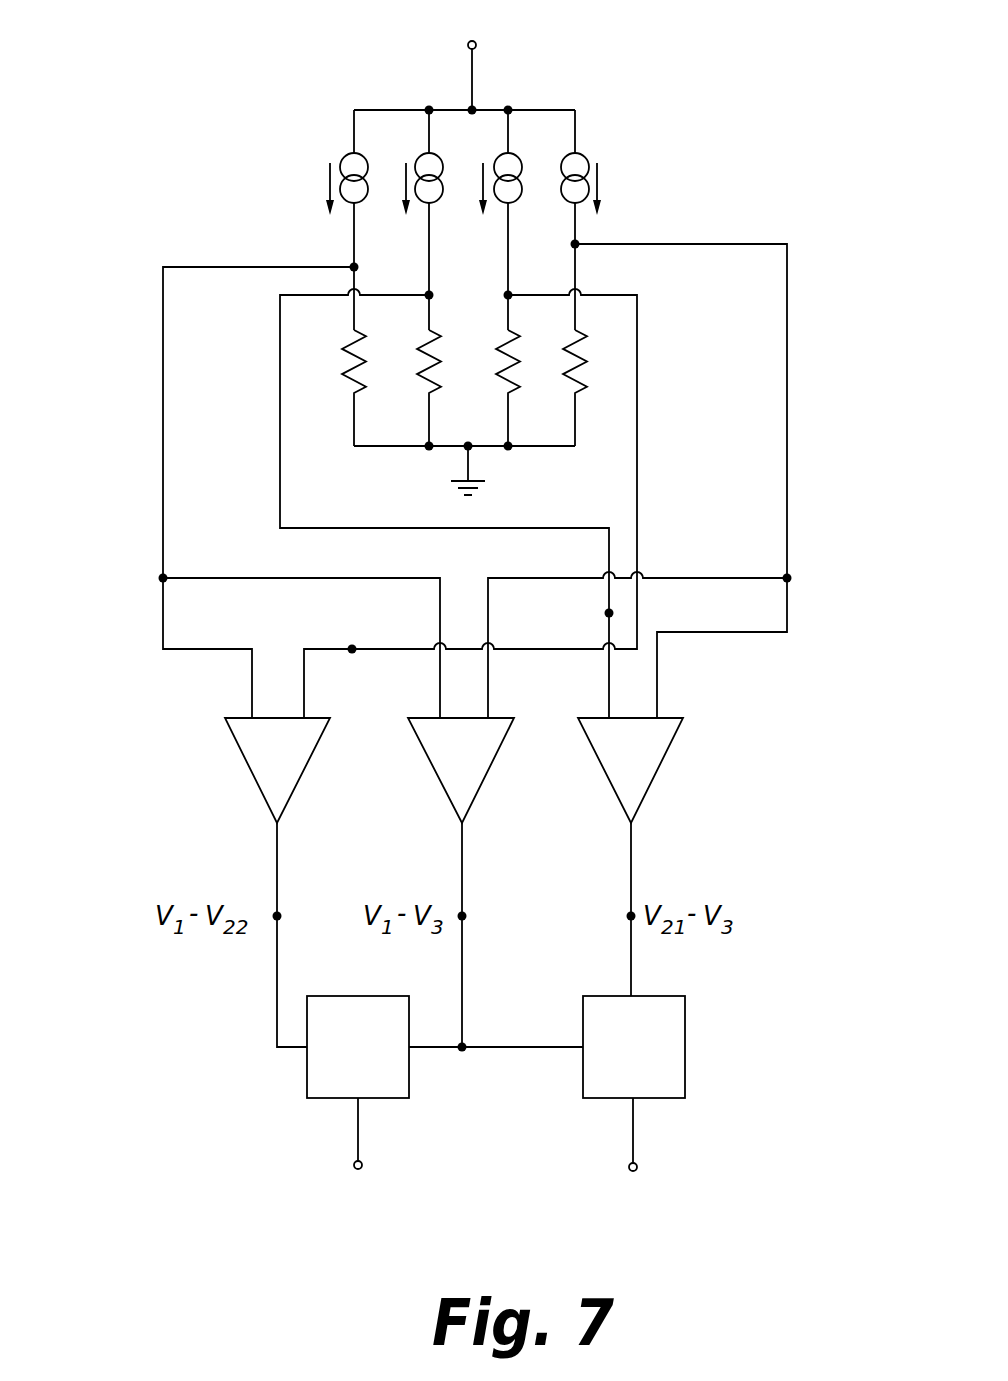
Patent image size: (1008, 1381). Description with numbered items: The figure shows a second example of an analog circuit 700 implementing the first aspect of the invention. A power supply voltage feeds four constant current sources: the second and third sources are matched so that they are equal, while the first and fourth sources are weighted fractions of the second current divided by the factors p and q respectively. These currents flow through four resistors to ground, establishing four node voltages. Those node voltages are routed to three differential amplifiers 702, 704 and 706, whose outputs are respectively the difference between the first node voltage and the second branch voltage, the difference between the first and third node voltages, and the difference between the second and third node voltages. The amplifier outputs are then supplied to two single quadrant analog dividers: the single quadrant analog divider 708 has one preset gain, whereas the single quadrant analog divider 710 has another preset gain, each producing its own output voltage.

The analog circuit 700 is at (270, 136).
The differential amplifier 702 is at (251, 770).
The differential amplifier 704 is at (445, 790).
The differential amplifier 706 is at (656, 772).
The single quadrant analog divider 708 is at (685, 1053).
The single quadrant analog divider 710 is at (307, 1078).